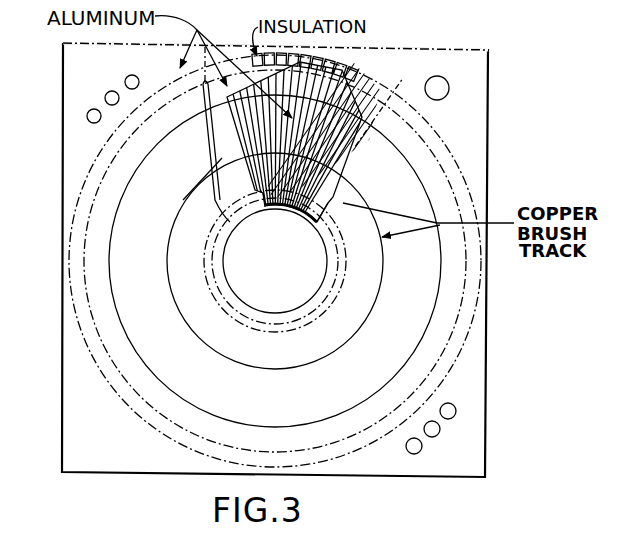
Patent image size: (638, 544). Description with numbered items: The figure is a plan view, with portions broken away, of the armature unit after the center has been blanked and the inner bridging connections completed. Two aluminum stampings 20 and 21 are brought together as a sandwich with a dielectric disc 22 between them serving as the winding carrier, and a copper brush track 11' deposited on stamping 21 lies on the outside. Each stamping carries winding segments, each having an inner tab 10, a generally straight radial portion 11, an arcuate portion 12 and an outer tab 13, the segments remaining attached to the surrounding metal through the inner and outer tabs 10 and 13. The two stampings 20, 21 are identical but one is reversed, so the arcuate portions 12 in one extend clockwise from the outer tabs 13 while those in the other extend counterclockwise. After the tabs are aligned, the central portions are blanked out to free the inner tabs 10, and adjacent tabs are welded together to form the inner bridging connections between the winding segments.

The inner tab 10 is at (285, 208).
The generally straight radial portion 11 is at (331, 142).
The copper brush track 11' is at (349, 201).
The arcuate portion 12 is at (350, 110).
The outer tab 13 is at (338, 72).
The stamping 20 is at (217, 108).
The aluminum stamping 21 is at (479, 77).
The dielectric disc 22 is at (255, 60).